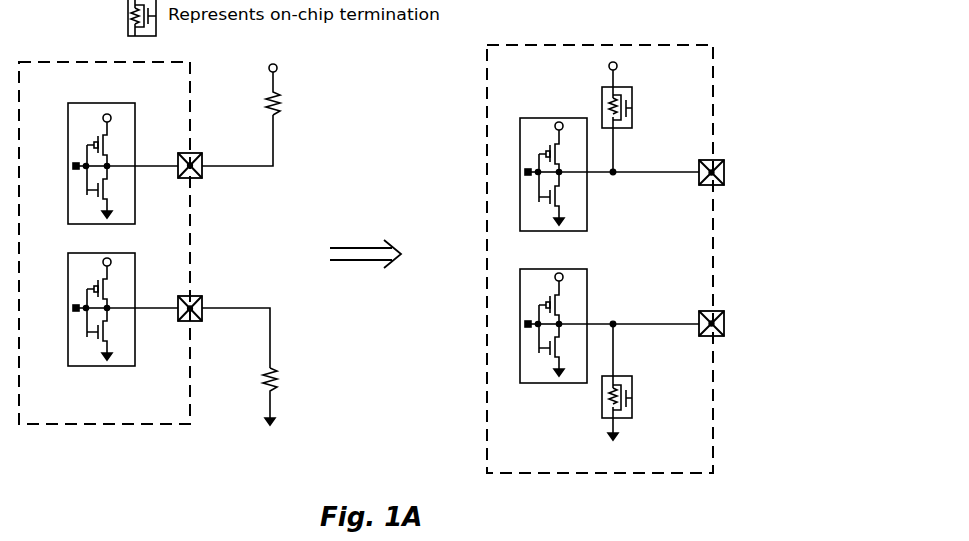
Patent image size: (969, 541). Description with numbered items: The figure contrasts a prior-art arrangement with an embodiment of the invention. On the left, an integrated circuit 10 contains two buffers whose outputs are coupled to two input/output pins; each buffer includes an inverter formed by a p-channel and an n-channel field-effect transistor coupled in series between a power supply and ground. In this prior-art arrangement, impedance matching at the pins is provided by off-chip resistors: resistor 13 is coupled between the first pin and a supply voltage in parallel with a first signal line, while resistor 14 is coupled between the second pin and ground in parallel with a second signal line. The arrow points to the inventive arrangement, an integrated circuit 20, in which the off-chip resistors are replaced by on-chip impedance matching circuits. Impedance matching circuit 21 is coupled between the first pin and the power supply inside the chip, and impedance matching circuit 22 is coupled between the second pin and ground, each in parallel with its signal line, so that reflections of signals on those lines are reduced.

The integrated circuit 10 is at (30, 62).
The off-chip resistor 13 is at (280, 102).
The off-chip resistor 14 is at (280, 379).
The integrated circuit 20 is at (613, 45).
The on-chip impedance matching circuit 21 is at (632, 99).
The on-chip impedance matching circuit 22 is at (632, 392).